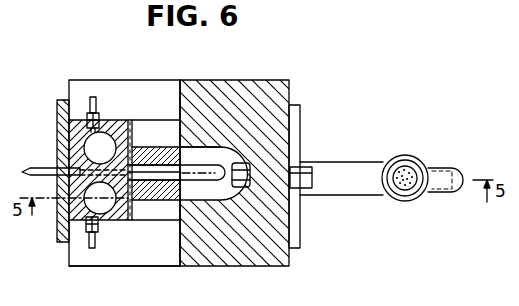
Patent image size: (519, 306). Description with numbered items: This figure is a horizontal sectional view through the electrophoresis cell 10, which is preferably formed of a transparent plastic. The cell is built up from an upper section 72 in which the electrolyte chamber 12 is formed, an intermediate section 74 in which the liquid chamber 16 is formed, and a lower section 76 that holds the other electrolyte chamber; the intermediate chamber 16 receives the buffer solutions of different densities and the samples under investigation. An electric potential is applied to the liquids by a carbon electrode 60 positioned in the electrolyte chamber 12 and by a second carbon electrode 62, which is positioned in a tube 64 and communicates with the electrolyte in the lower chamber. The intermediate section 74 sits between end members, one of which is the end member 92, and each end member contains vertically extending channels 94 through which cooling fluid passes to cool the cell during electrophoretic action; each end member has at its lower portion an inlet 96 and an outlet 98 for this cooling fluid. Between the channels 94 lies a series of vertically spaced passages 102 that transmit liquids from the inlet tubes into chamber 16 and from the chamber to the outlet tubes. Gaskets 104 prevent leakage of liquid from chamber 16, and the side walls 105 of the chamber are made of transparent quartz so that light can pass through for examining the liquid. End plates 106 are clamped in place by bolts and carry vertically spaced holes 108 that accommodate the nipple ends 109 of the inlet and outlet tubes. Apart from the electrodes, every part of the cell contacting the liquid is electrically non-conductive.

The electrophoresis cell 10 is at (250, 80).
The electrolyte chamber 12 is at (218, 201).
The intermediate chamber 16 is at (160, 172).
The carbon electrode 60 is at (242, 160).
The carbon electrode 62 is at (405, 167).
The tube 64 is at (405, 200).
The upper section 72 is at (248, 262).
The intermediate section 74 is at (171, 210).
The lower section 76 is at (158, 262).
The end member 92 is at (76, 137).
The channels 94 is at (102, 138).
The inlet 96 is at (96, 97).
The outlet 98 is at (97, 247).
The passages 102 is at (130, 146).
The gaskets 104 is at (133, 121).
The side walls 105 is at (167, 148).
The end plates 106 is at (60, 110).
The holes 108 is at (58, 176).
The nipple ends 109 is at (53, 168).